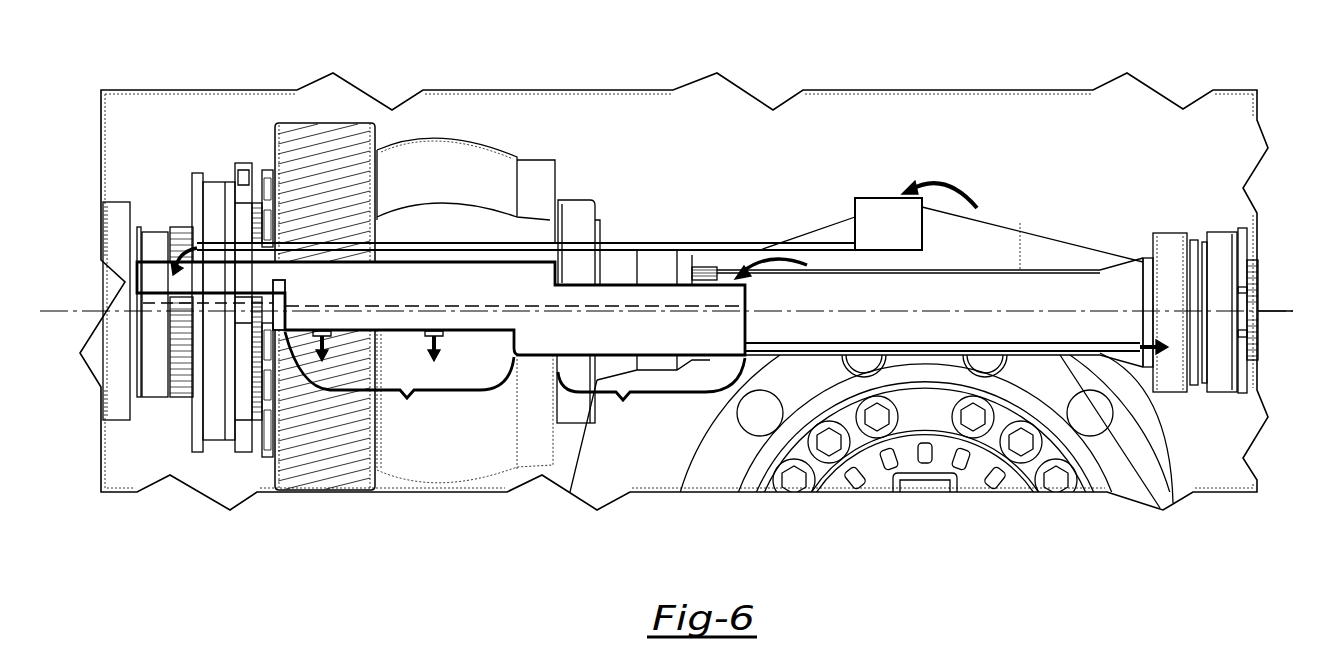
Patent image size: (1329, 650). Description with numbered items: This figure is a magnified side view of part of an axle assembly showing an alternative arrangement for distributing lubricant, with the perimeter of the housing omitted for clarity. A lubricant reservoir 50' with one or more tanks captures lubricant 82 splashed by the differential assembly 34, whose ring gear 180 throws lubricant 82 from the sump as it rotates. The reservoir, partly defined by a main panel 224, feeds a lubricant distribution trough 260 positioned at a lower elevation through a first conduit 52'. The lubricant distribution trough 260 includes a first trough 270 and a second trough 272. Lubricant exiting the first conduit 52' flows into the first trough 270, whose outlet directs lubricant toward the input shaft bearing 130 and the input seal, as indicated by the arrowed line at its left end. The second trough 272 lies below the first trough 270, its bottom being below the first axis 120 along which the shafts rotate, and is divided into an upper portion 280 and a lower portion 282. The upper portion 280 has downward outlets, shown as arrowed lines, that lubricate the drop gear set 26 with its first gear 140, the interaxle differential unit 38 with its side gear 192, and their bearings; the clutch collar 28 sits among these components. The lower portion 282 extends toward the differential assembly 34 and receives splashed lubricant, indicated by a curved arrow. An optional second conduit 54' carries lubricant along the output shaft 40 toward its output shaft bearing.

The input shaft bearing 130 is at (118, 200).
The lubricant distribution trough 260 is at (129, 260).
The first trough 270 is at (157, 257).
The clutch collar 28 is at (200, 173).
The lubricant 82 is at (236, 283).
The drop gear set 26 is at (325, 256).
The first gear 140 is at (325, 112).
The interaxle differential unit 38 is at (444, 138).
The main panel 224 is at (287, 297).
The second trough 272 is at (540, 250).
The side gear 192 is at (617, 267).
The first conduit 52' is at (749, 222).
The lubricant reservoir 50' is at (916, 215).
The output shaft 40 is at (1022, 226).
The second conduit 54' is at (956, 319).
The upper portion 280 is at (399, 380).
The lower portion 282 is at (651, 393).
The differential assembly 34 is at (924, 504).
The ring gear 180 is at (1212, 439).
The first axis 120 is at (1271, 313).